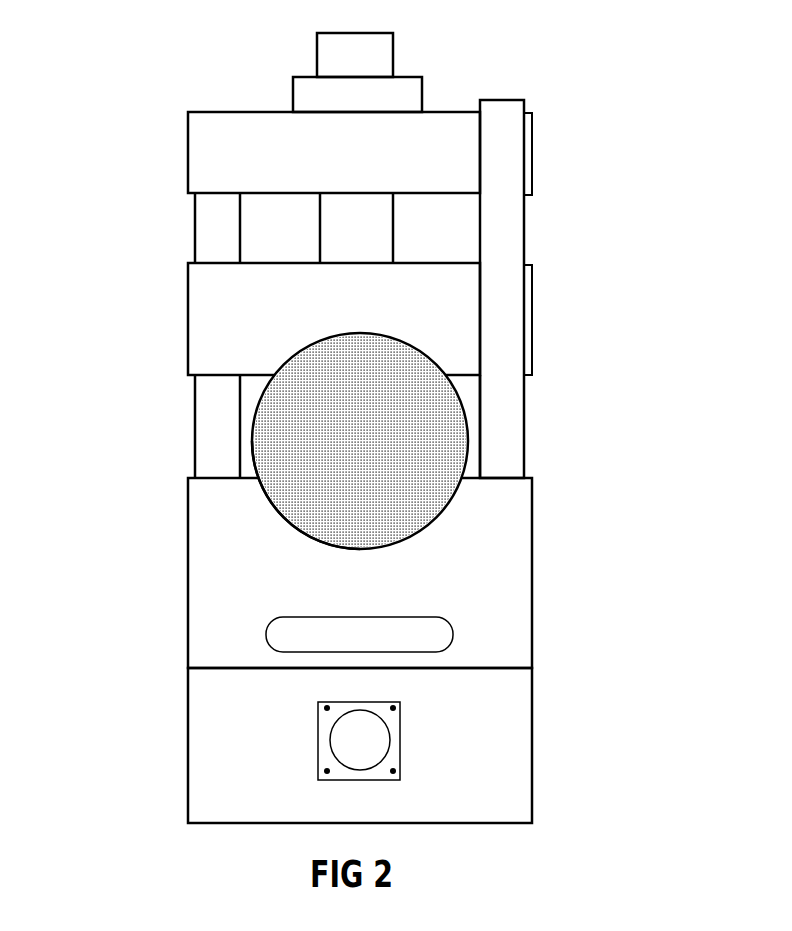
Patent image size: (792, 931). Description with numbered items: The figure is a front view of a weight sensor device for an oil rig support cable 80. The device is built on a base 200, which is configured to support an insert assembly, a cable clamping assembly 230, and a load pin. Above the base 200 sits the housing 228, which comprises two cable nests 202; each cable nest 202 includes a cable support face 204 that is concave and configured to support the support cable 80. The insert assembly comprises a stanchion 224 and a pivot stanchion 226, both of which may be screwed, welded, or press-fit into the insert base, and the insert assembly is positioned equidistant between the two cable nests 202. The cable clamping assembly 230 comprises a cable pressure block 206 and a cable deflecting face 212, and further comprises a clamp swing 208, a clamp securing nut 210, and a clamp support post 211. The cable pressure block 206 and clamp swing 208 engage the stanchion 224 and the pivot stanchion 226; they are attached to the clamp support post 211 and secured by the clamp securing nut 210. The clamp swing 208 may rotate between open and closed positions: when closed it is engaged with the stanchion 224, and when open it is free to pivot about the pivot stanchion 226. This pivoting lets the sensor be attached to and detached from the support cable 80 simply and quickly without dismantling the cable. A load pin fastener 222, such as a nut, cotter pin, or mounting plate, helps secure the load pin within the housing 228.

The base 200 is at (187, 738).
The cable nest 202 is at (505, 585).
The cable support face 204 is at (272, 505).
The cable pressure block 206 is at (203, 303).
The clamp swing 208 is at (232, 133).
The clamp securing nut 210 is at (412, 90).
The clamp support post 211 is at (347, 45).
The cable deflecting face 212 is at (427, 355).
The support cable 80 is at (447, 422).
The load pin fastener 222 is at (322, 753).
The stanchion 224 is at (502, 460).
The pivot stanchion 226 is at (232, 408).
The housing 228 is at (503, 748).
The cable clamping assembly 230 is at (550, 218).